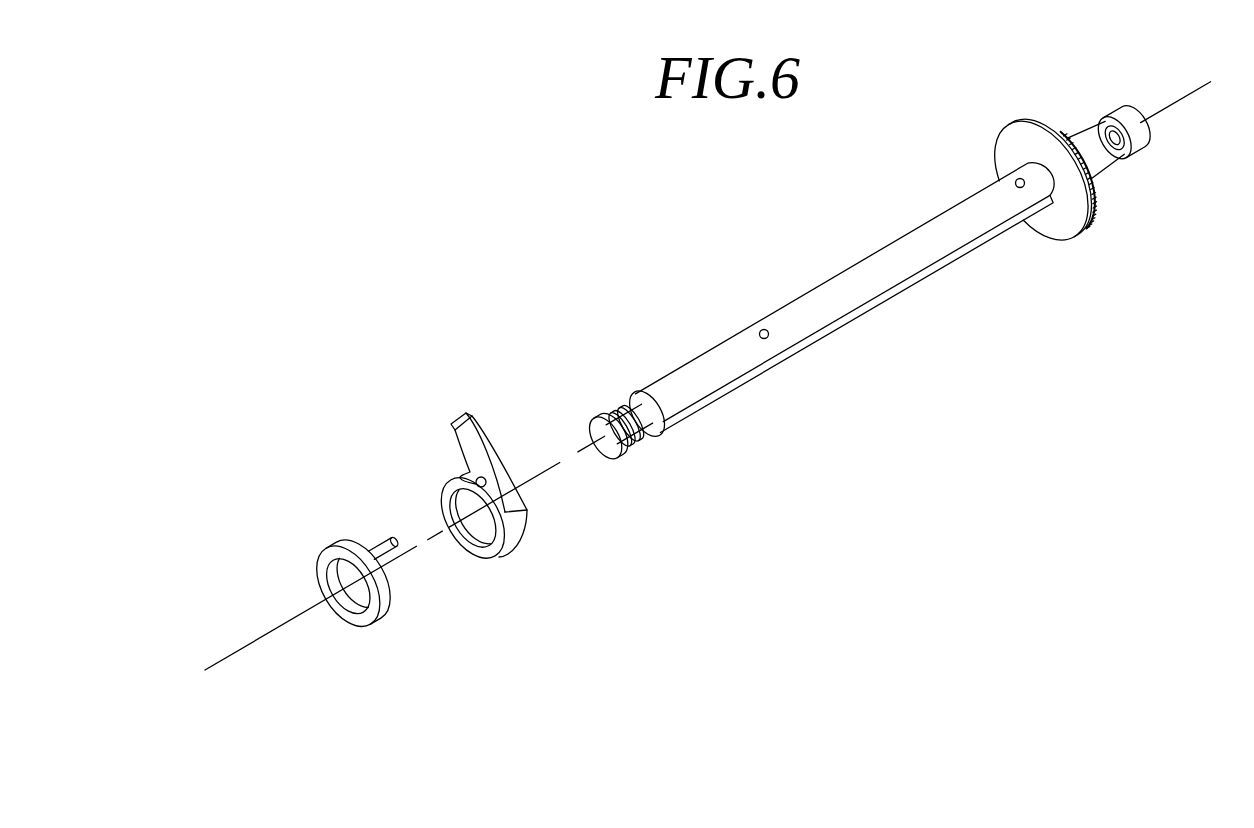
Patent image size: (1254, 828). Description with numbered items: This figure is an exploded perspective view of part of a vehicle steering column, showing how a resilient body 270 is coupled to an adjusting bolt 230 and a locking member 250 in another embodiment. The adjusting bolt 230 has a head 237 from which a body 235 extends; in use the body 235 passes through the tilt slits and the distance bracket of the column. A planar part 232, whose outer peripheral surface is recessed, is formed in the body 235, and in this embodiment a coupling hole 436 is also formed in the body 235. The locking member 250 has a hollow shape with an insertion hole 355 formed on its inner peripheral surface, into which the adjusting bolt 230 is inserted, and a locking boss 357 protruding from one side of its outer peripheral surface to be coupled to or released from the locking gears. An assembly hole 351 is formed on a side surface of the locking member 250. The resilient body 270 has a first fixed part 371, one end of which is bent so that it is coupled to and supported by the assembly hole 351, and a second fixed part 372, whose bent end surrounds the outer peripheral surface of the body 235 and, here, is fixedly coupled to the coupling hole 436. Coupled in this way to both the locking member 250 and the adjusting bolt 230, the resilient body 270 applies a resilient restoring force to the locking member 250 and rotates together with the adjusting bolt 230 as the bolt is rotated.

The adjusting bolt 230 is at (884, 284).
The planar part 232 is at (821, 343).
The body 235 is at (832, 297).
The head 237 is at (1013, 128).
The coupling hole 436 is at (764, 329).
The locking member 250 is at (460, 519).
The insertion hole 355 is at (497, 557).
The locking boss 357 is at (472, 424).
The assembly hole 351 is at (475, 481).
The resilient body 270 is at (323, 578).
The first fixed part 371 is at (381, 543).
The second fixed part 372 is at (328, 580).